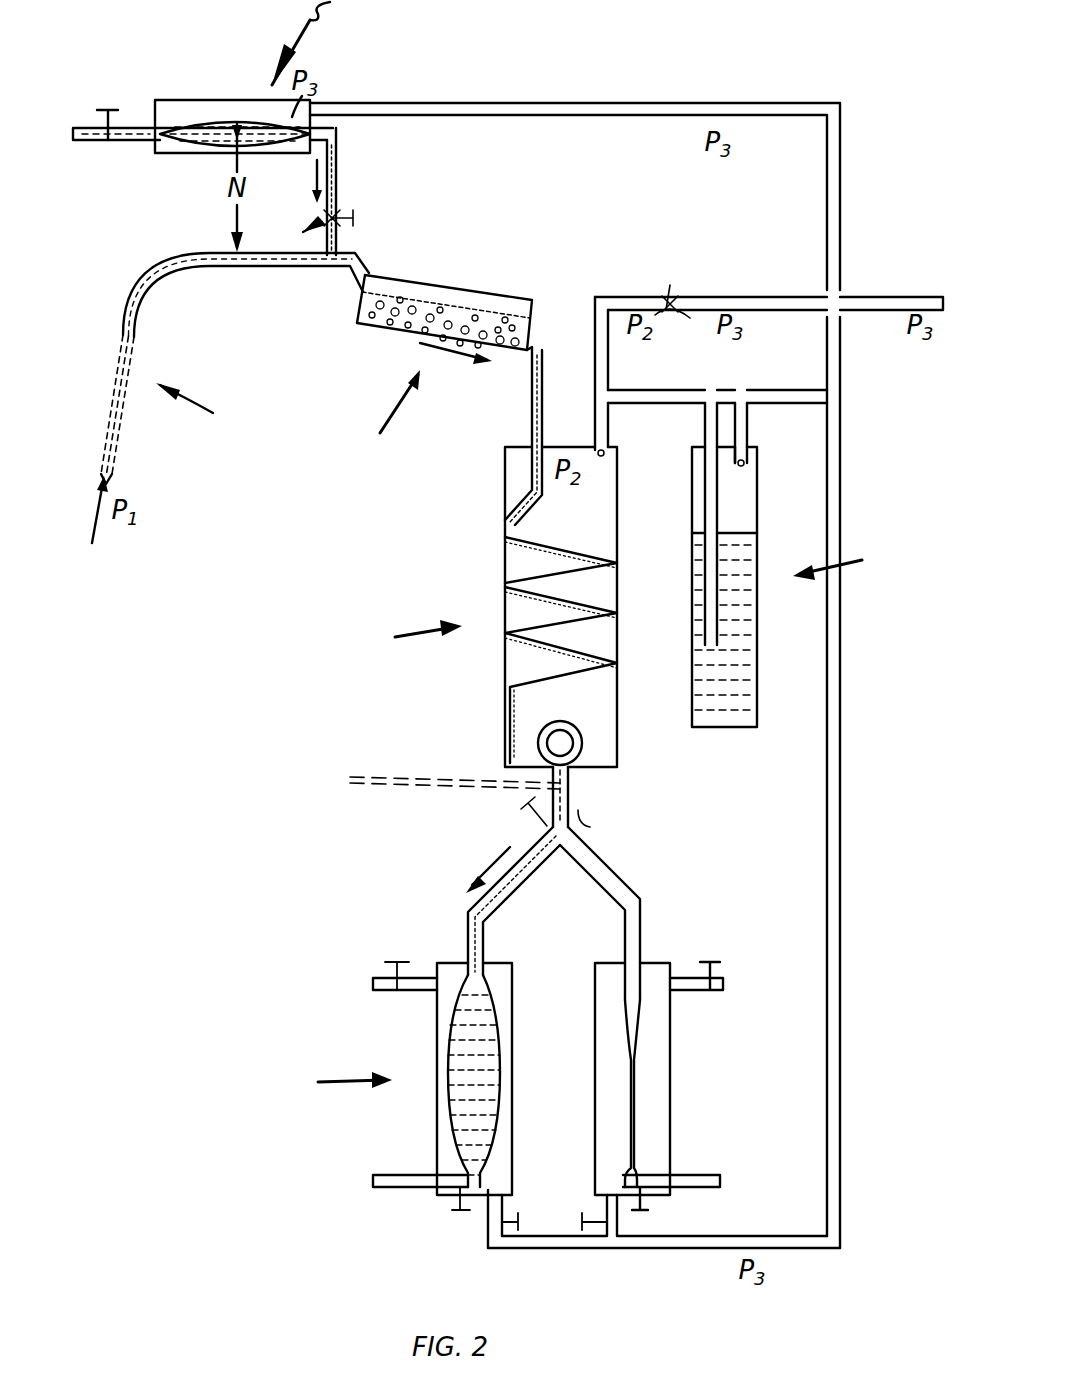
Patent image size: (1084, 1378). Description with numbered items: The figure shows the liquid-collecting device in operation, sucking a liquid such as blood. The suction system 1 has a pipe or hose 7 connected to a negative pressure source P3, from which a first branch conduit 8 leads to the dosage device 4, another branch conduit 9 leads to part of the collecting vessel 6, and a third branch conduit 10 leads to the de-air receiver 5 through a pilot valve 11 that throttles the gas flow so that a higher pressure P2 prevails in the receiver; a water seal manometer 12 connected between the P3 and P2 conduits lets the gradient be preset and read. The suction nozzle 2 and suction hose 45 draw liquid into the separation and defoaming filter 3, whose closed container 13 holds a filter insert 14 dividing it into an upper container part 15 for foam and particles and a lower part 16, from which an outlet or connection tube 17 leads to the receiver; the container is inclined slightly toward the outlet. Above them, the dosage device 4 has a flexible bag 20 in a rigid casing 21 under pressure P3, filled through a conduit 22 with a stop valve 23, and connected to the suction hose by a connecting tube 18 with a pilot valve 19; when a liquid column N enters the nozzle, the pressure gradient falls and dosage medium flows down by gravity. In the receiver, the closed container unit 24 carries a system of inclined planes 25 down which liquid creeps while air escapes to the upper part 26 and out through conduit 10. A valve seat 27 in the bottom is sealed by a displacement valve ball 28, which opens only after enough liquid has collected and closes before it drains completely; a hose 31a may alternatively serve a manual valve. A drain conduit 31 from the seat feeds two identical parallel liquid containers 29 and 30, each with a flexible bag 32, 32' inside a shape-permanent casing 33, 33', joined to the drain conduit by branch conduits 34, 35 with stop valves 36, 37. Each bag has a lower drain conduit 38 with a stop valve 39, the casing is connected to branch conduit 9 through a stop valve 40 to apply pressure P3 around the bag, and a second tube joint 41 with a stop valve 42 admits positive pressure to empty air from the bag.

The suction system 1 is at (835, 559).
The suction nozzle 2 is at (235, 368).
The separation and defoaming filter 3 is at (390, 412).
The dosage device 4 is at (310, 42).
The de-air receiver 5 is at (416, 635).
The collecting vessel 6 is at (343, 1080).
The pipe or hose 7 is at (897, 297).
The first branch conduit 8 is at (836, 195).
The branch conduit 9 is at (842, 492).
The third branch conduit 10 is at (620, 297).
The pilot valve 11 is at (668, 296).
The manometer or pressure gauge 12 is at (742, 498).
The closed container 13 is at (447, 270).
The filter insert 14 is at (400, 283).
The upper container part 15 is at (503, 290).
The lower container part 16 is at (503, 353).
The outlet or connection tube 17 is at (543, 410).
The connecting tube 18 is at (337, 173).
The pilot valve 19 is at (353, 214).
The flexible container or bag 20 is at (195, 128).
The rigid casing 21 is at (213, 122).
The conduit 22 is at (123, 140).
The stop valve 23 is at (108, 108).
The closed container unit 24 is at (505, 557).
The system of inclined planes 25 is at (525, 655).
The upper part 26 is at (590, 502).
The valve seat 27 is at (580, 747).
The displacement valve ball 28 is at (577, 723).
The liquid container 29 is at (427, 1132).
The liquid container 30 is at (677, 1113).
The drain conduit 31 is at (570, 792).
The hose or conduit 31a is at (393, 782).
The flexible bag 32 is at (506, 1081).
The flexible bag 32' is at (677, 1093).
The shape-permanent casing 33 is at (501, 1065).
The shape-permanent casing 33' is at (681, 1086).
The branch conduit 34 is at (497, 893).
The branch conduit 35 is at (617, 870).
The stop valve 36 is at (533, 818).
The stop valve 37 is at (587, 825).
The drain conduit 38 is at (400, 1187).
The stop valve 39 is at (463, 1213).
The stop valve 40 is at (510, 1213).
The second tube joint 41 is at (418, 982).
The stop valve 42 is at (383, 967).
The suction hose 45 is at (257, 270).